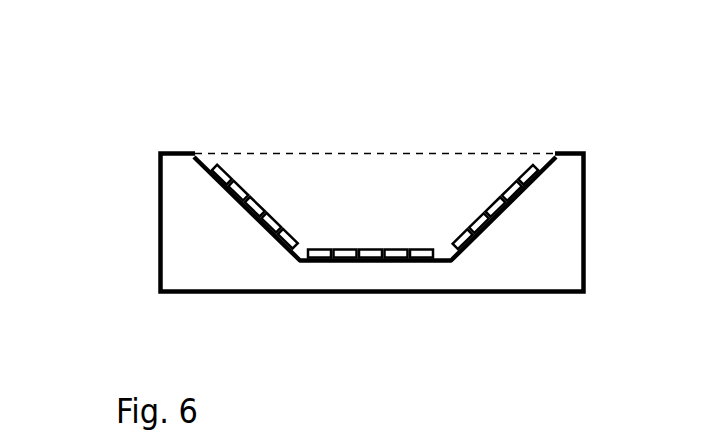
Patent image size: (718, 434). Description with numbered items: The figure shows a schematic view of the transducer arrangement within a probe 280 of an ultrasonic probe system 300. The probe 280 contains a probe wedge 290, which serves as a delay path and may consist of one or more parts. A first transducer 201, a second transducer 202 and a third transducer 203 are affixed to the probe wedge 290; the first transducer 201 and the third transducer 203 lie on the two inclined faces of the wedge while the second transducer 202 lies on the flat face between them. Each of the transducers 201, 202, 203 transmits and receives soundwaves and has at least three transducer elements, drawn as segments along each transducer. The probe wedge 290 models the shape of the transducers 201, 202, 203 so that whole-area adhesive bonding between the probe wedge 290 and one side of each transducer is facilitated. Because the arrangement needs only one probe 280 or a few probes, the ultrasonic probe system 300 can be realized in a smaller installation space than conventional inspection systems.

The ultrasonic probe system 300 is at (561, 82).
The probe wedge 290 is at (594, 171).
The probe 280 is at (222, 107).
The first transducer 201 is at (224, 233).
The second transducer 202 is at (377, 272).
The third transducer 203 is at (500, 231).